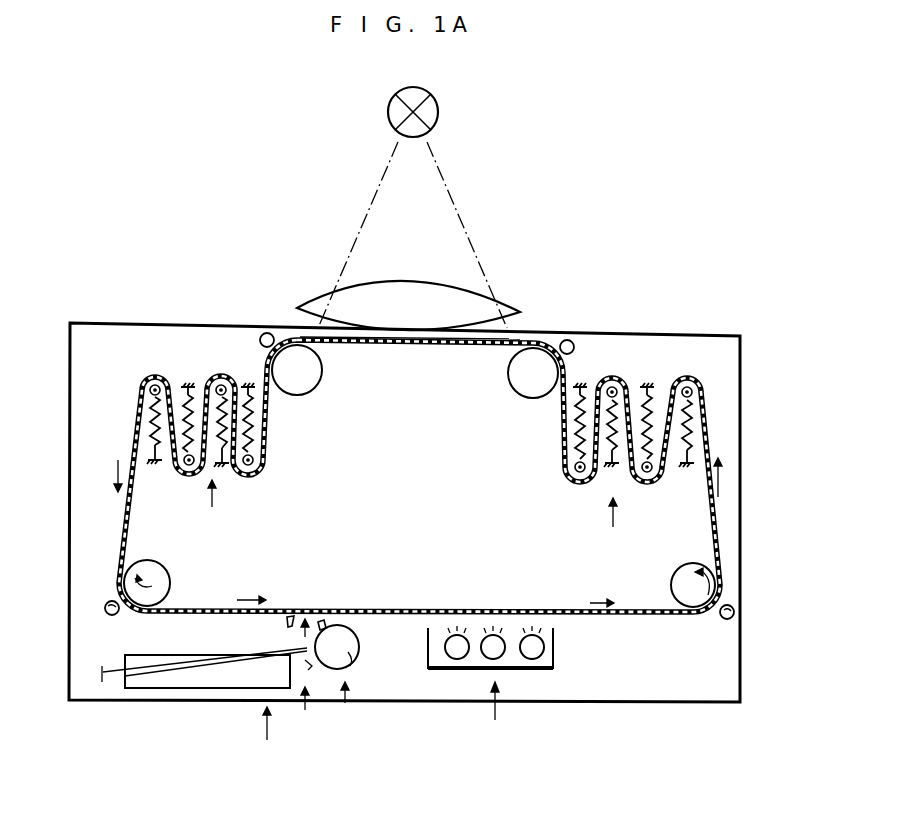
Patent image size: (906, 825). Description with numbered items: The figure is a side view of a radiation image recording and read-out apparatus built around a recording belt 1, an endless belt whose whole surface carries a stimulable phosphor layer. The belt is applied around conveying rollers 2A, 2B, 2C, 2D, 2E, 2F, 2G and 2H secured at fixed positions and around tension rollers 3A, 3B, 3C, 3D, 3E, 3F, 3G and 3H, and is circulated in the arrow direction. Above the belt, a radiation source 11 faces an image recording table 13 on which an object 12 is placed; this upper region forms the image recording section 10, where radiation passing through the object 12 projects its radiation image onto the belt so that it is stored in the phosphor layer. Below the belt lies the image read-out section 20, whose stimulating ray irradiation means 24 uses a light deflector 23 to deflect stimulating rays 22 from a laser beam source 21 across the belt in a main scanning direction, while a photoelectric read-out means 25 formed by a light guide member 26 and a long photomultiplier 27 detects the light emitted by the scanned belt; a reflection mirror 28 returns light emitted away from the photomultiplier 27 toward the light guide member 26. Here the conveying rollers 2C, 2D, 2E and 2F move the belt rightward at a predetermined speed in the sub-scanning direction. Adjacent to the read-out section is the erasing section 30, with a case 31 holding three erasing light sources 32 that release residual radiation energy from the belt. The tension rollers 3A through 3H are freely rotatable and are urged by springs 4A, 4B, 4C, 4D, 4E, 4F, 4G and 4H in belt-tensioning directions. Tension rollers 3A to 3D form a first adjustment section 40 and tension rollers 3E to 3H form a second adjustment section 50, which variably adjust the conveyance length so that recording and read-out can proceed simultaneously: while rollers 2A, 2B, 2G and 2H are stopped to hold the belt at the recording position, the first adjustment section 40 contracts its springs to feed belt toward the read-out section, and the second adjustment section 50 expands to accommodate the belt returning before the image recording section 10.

The recording belt 1 is at (375, 347).
The conveying roller 2A is at (308, 370).
The conveying roller 2B is at (267, 333).
The conveying roller 2C is at (160, 578).
The conveying roller 2D is at (115, 616).
The conveying roller 2E is at (688, 563).
The conveying roller 2F is at (727, 623).
The conveying roller 2G is at (513, 390).
The conveying roller 2H is at (572, 338).
The tension roller 3A is at (265, 463).
The tension roller 3B is at (220, 377).
The tension roller 3C is at (187, 467).
The tension roller 3D is at (155, 377).
The tension roller 3E is at (697, 382).
The tension roller 3F is at (657, 477).
The tension roller 3G is at (612, 382).
The tension roller 3H is at (577, 483).
The spring 4A is at (265, 418).
The spring 4B is at (227, 453).
The spring 4C is at (192, 398).
The spring 4D is at (150, 418).
The spring 4E is at (693, 425).
The spring 4F is at (660, 395).
The spring 4G is at (608, 457).
The spring 4H is at (573, 433).
The image recording section 10 is at (513, 252).
The radiation source 11 is at (438, 110).
The object 12 is at (513, 300).
The image recording table 13 is at (525, 332).
The image read-out section 20 is at (298, 717).
The laser beam source 21 is at (185, 678).
The stimulating rays 22 is at (207, 663).
The light deflector 23 is at (308, 663).
The stimulating ray irradiation means 24 is at (261, 741).
The photoelectric read-out means 25 is at (371, 716).
The light guide member 26 is at (323, 620).
The photomultiplier 27 is at (357, 660).
The reflection mirror 28 is at (288, 622).
The erasing section 30 is at (501, 718).
The case 31 is at (555, 653).
The erasing light source 32 is at (532, 660).
The first adjustment section 40 is at (214, 507).
The second adjustment section 50 is at (615, 529).